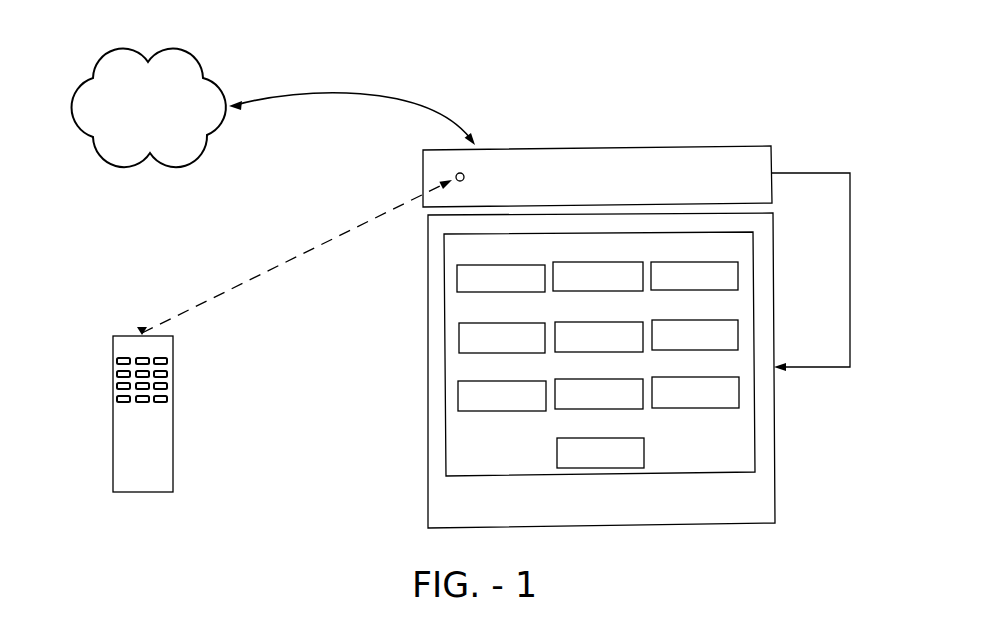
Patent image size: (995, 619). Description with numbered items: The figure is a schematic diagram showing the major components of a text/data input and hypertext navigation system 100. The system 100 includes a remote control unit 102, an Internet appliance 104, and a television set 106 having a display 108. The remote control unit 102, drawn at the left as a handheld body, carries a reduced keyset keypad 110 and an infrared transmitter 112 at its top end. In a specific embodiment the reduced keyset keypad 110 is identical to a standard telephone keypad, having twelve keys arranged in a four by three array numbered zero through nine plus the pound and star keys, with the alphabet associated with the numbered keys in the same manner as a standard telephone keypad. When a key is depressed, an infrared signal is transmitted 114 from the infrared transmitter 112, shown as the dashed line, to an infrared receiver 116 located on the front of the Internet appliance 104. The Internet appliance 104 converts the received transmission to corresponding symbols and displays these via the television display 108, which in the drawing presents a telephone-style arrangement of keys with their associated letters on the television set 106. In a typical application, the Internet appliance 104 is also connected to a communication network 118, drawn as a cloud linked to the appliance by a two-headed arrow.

The text/data input and hypertext navigation system 100 is at (303, 503).
The remote control unit 102 is at (173, 433).
The Internet appliance 104 is at (692, 147).
The television set 106 is at (773, 435).
The display 108 is at (710, 476).
The reduced keyset keypad 110 is at (92, 392).
The infrared transmitter 112 is at (142, 326).
The infrared signal transmission 114 is at (313, 249).
The infrared receiver 116 is at (464, 176).
The communication network 118 is at (190, 53).